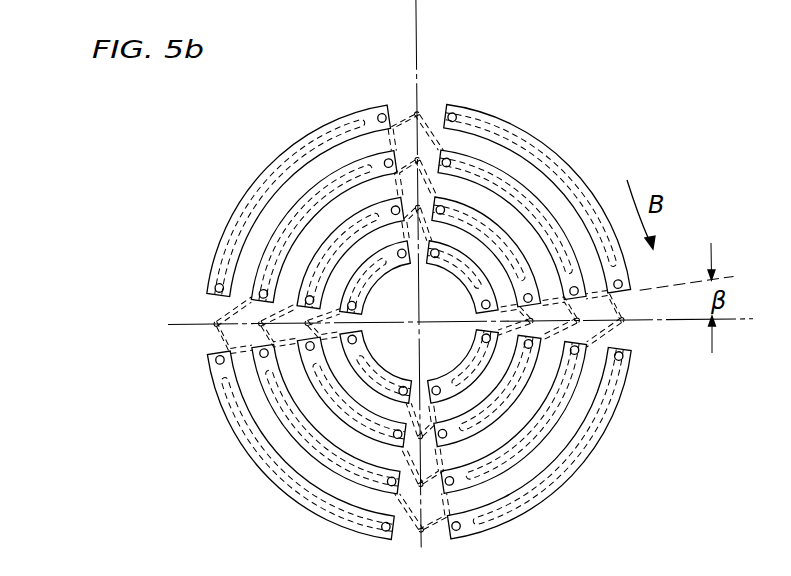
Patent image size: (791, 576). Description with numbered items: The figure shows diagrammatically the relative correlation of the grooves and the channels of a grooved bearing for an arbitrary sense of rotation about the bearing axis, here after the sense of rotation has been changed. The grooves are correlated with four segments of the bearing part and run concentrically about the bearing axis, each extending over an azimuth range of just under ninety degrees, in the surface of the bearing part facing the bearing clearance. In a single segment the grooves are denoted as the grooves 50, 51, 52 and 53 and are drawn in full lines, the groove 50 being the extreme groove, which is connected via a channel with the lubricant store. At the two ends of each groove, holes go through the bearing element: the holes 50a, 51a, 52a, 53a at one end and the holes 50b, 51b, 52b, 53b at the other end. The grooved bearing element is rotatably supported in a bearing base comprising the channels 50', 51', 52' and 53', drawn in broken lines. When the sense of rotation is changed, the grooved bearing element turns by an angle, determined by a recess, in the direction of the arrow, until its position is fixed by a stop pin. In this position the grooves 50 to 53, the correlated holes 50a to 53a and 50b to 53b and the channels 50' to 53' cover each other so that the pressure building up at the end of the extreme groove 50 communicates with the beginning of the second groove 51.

The groove 50 is at (419, 315).
The groove 51 is at (419, 283).
The groove 52 is at (425, 256).
The groove 53 is at (431, 225).
The channel 50' is at (422, 322).
The channel 51' is at (419, 243).
The channel 52' is at (419, 254).
The channel 53' is at (377, 245).
The hole 50a is at (620, 293).
The hole 51a is at (576, 297).
The hole 52a is at (531, 304).
The hole 53a is at (489, 309).
The hole 50b is at (453, 116).
The hole 51b is at (445, 158).
The hole 52b is at (395, 209).
The hole 53b is at (402, 253).